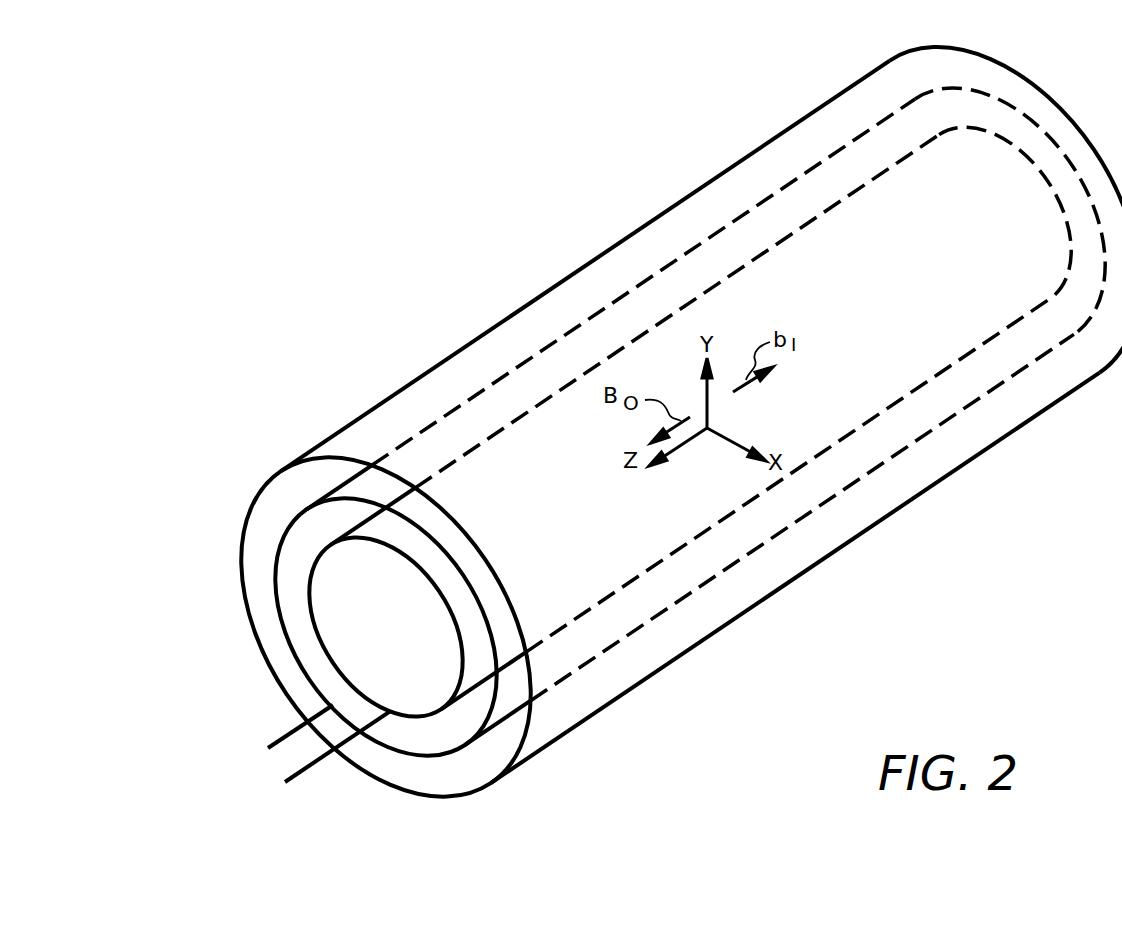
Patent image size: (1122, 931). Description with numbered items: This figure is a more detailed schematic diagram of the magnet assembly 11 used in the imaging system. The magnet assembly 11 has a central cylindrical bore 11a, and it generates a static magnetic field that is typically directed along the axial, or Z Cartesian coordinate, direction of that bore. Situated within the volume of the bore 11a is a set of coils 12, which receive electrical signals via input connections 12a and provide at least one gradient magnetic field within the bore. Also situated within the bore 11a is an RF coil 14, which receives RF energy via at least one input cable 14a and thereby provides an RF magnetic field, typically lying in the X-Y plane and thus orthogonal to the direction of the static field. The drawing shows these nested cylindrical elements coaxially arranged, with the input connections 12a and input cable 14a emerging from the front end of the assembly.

The magnet assembly 11 is at (419, 374).
The central cylindrical bore 11a is at (256, 520).
The set of coils 12 is at (284, 617).
The RF coil 14 is at (322, 643).
The input connections 12a is at (282, 745).
The input cable 14a is at (306, 769).